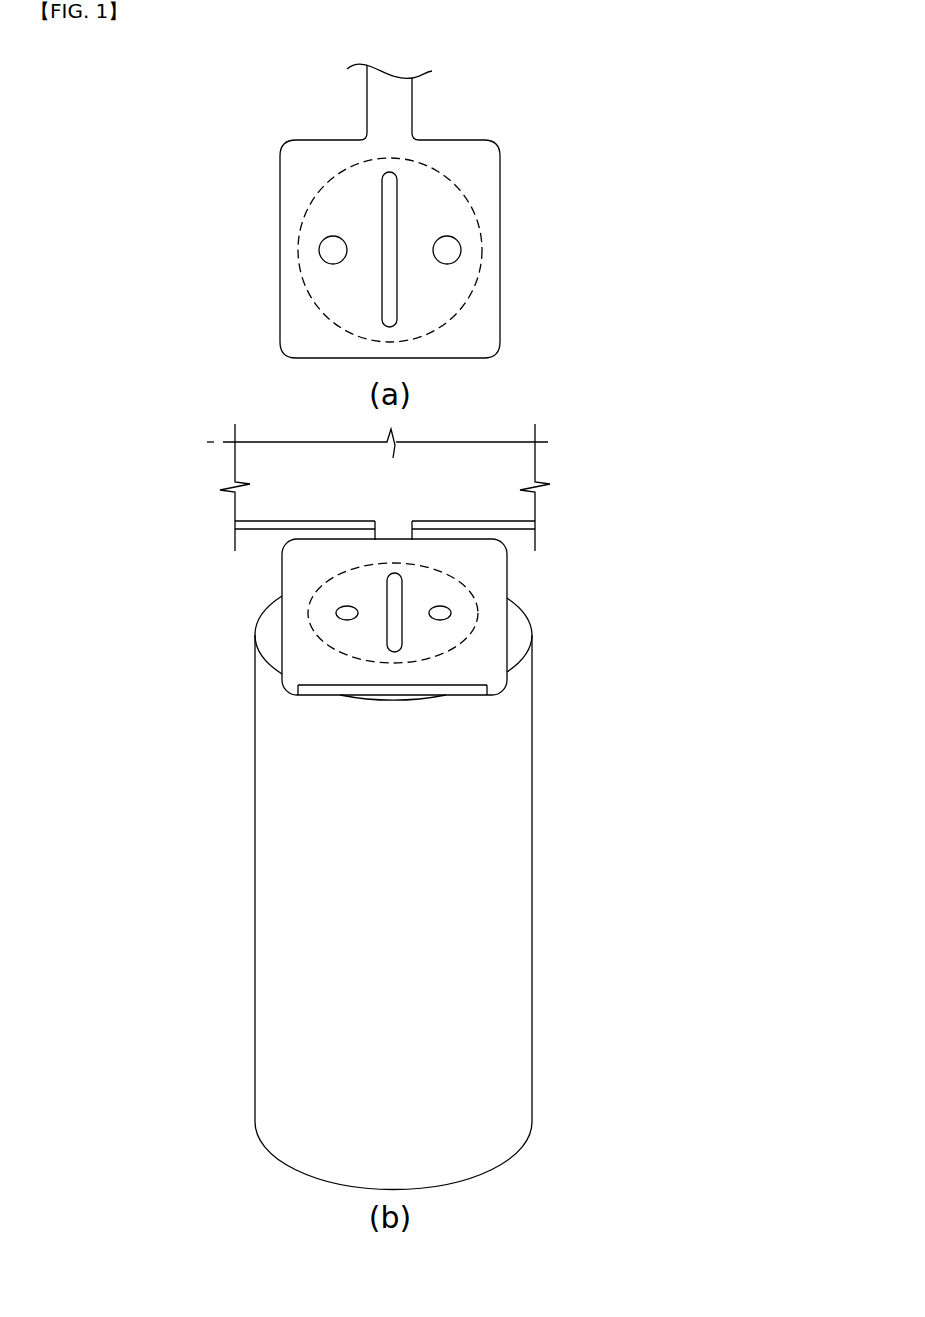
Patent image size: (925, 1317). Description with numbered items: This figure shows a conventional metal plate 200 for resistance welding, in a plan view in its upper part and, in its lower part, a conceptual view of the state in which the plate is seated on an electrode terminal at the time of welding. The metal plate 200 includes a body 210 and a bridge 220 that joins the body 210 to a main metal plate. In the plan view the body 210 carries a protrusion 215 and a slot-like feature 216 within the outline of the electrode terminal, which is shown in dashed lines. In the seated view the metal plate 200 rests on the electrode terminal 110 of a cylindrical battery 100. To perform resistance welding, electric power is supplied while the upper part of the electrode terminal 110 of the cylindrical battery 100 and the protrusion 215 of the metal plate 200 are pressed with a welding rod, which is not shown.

The cylindrical battery 100 is at (525, 817).
The electrode terminal 110 is at (305, 207).
The metal plate 200 is at (530, 462).
The body 210 is at (500, 180).
The protrusion 215 is at (320, 252).
The slit 216 is at (387, 283).
The bridge 220 is at (372, 101).